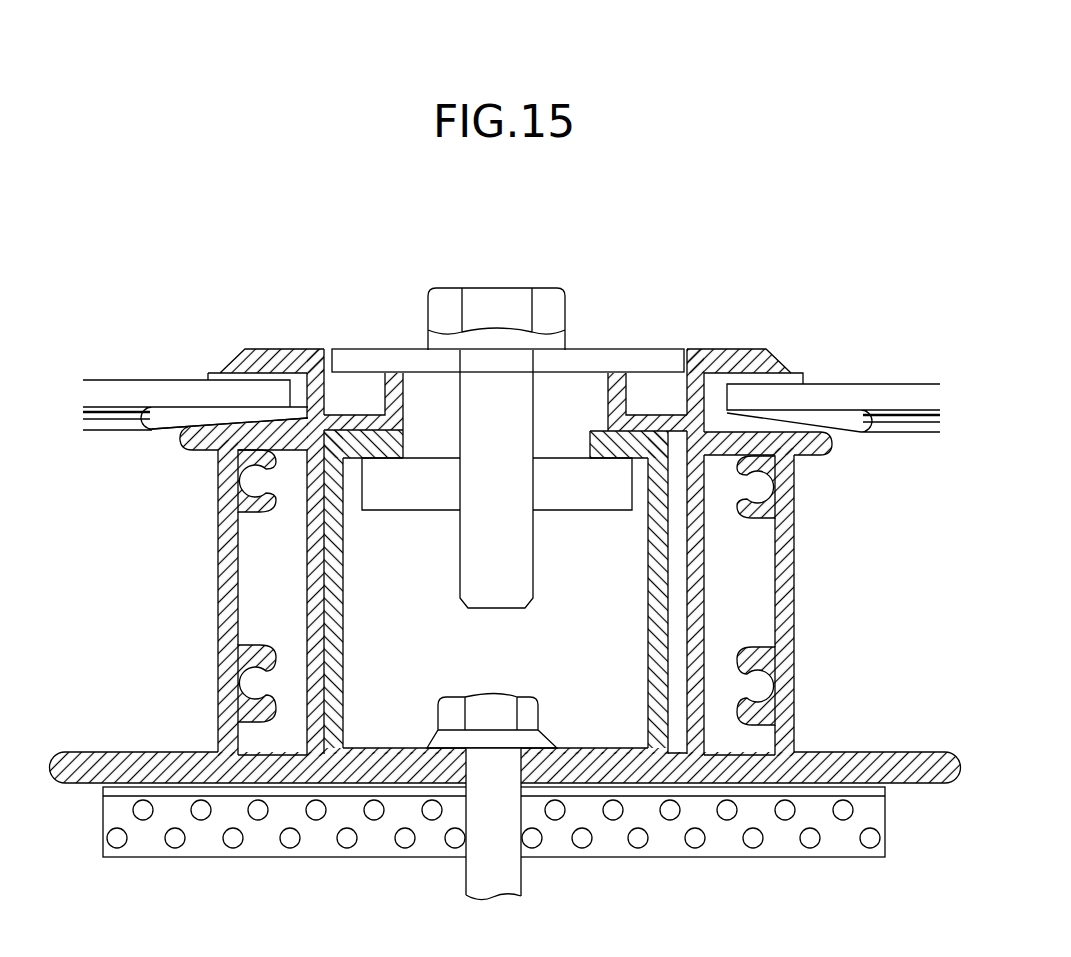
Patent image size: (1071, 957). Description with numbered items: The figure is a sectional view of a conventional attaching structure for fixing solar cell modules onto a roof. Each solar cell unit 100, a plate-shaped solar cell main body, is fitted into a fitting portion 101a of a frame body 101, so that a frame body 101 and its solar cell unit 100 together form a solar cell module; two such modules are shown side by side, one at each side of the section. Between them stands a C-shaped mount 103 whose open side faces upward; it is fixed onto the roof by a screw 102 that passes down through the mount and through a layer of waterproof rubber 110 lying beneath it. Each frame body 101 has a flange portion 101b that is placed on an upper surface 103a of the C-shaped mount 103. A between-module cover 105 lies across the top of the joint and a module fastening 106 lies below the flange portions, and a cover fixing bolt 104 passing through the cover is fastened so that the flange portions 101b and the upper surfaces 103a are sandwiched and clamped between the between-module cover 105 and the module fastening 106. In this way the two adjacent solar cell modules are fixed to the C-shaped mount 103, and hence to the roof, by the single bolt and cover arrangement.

The solar cell unit 100 is at (122, 390).
The frame body 101 is at (792, 551).
The fitting portion 101a is at (698, 366).
The flange portion 101b is at (657, 416).
The screw 102 is at (534, 706).
The C-shaped mount 103 is at (484, 577).
The upper surface 103a is at (589, 447).
The cover fixing bolt 104 is at (497, 308).
The between-module cover 105 is at (385, 352).
The module fastening 106 is at (402, 500).
The waterproof rubber 110 is at (763, 855).